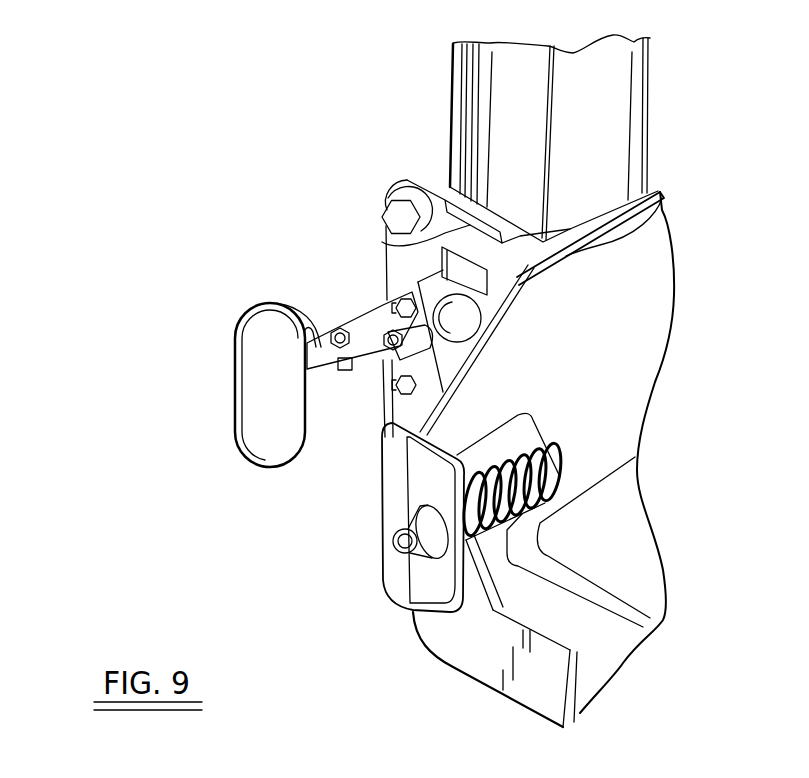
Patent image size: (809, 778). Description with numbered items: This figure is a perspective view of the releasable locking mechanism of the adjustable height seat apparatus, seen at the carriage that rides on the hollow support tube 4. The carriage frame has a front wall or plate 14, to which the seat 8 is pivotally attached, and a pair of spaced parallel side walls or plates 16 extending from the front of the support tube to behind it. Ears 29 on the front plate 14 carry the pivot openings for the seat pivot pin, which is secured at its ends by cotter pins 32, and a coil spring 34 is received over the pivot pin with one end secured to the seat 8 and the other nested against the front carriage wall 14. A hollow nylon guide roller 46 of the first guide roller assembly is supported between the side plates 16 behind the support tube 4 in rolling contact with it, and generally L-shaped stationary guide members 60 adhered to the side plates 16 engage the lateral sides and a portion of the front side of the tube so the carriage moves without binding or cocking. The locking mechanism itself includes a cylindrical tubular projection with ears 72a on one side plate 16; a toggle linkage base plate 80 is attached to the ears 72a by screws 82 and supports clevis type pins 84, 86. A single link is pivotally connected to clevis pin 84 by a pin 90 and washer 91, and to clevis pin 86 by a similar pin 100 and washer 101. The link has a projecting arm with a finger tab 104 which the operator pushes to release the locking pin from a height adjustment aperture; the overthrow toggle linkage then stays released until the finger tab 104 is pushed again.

The hollow support tube 4 is at (607, 96).
The seat 8 is at (632, 664).
The front wall or plate 14 is at (662, 204).
The side walls or plates 16 is at (387, 233).
The ears 29 is at (420, 590).
The cotter pins 32 is at (405, 518).
The coil spring 34 is at (560, 480).
The hollow nylon guide roller 46 is at (442, 180).
The L-shaped stationary guide members 60 is at (663, 223).
The ears 72a is at (460, 303).
The toggle linkage base plate 80 is at (437, 333).
The screws 82 is at (400, 295).
The clevis type pin 84 is at (430, 352).
The clevis type pin 86 is at (363, 307).
The pin 90 is at (360, 372).
The washer 91 is at (380, 363).
The pin 100 is at (333, 320).
The washer 101 is at (272, 300).
The finger tab 104 is at (270, 369).